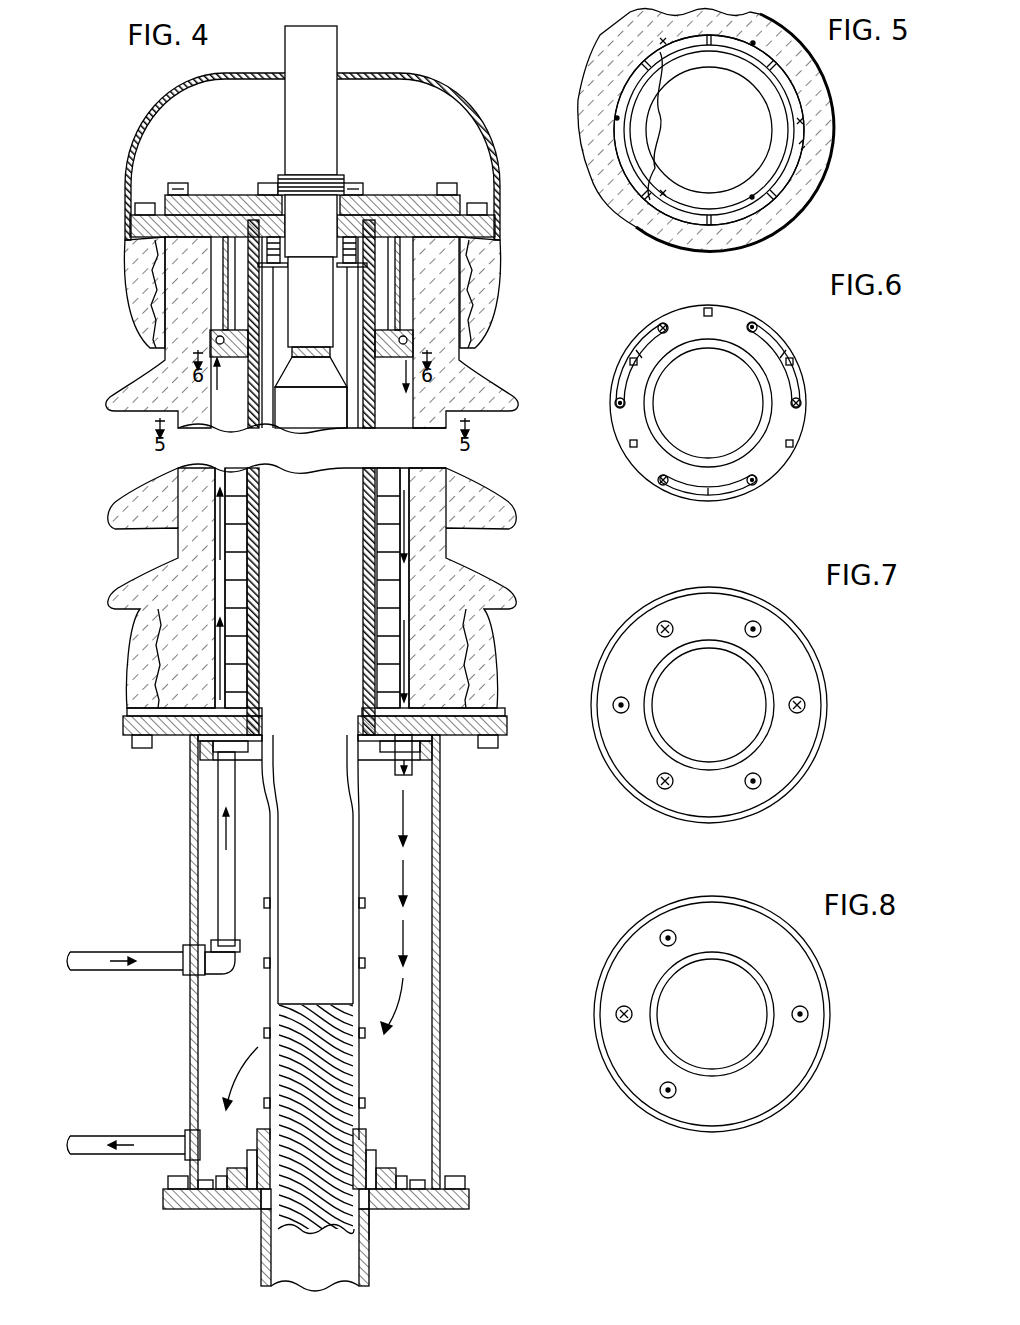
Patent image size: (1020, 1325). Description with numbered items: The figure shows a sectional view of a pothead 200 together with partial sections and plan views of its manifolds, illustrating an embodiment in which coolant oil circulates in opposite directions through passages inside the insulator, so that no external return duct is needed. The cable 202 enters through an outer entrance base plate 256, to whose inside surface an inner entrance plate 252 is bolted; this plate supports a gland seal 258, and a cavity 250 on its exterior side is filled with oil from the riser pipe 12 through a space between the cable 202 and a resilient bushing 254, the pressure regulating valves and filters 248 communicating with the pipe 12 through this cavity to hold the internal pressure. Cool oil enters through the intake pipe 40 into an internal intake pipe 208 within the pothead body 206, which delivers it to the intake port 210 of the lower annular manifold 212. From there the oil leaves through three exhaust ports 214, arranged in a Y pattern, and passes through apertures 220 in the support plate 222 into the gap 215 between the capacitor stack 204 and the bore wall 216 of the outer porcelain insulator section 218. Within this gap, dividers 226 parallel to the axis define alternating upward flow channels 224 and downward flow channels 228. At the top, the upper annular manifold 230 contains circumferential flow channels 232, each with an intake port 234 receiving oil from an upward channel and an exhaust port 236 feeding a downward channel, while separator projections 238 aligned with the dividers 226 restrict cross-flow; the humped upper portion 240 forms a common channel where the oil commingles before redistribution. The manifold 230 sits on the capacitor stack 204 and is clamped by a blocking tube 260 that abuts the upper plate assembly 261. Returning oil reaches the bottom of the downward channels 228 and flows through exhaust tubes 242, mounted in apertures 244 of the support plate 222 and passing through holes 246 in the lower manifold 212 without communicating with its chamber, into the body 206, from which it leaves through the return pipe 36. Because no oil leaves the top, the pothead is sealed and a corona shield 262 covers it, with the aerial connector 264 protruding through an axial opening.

In FIG. 4, the riser pipe 12 is at (370, 1250).
In FIG. 4, the return pipe 36 is at (118, 1137).
In FIG. 4, the intake pipe 40 is at (100, 952).
In FIG. 4, the pothead 200 is at (105, 168).
In FIG. 4, the cable 202 is at (331, 901).
In FIG. 4, the capacitor stack 204 is at (410, 563).
In FIG. 5, the capacitor stack 204 is at (786, 132).
In FIG. 4, the pothead body 206 is at (440, 905).
In FIG. 4, the internal intake pipe 208 is at (225, 870).
In FIG. 4, the intake port 210 is at (262, 762).
In FIG. 8, the intake port 210 is at (615, 1014).
In FIG. 4, the lower annular manifold 212 is at (252, 752).
In FIG. 7, the lower annular manifold 212 is at (828, 648).
In FIG. 8, the lower annular manifold 212 is at (625, 930).
In FIG. 4, the exhaust ports 214 is at (232, 746).
In FIG. 7, the exhaust ports 214 is at (762, 627).
In FIG. 4, the gap 215 is at (412, 658).
In FIG. 5, the gap 215 is at (785, 188).
In FIG. 4, the bore wall 216 is at (470, 596).
In FIG. 5, the bore wall 216 is at (800, 140).
In FIG. 4, the outer porcelain insulator section 218 is at (472, 492).
In FIG. 5, the outer porcelain insulator section 218 is at (838, 158).
In FIG. 4, the apertures 220 is at (215, 707).
In FIG. 4, the support plate 222 is at (507, 727).
In FIG. 5, the upward flow channels 224 is at (614, 106).
In FIG. 5, the dividers 226 is at (640, 70).
In FIG. 5, the downward flow channels 228 is at (691, 126).
In FIG. 4, the upper annular manifold 230 is at (296, 332).
In FIG. 6, the upper annular manifold 230 is at (815, 420).
In FIG. 6, the flow channels 232 is at (640, 340).
In FIG. 4, the intake port 234 is at (221, 350).
In FIG. 6, the intake port 234 is at (614, 405).
In FIG. 4, the exhaust port 236 is at (405, 357).
In FIG. 6, the exhaust port 236 is at (665, 322).
In FIG. 6, the separator projections 238 is at (722, 308).
In FIG. 4, the upper portion 240 is at (392, 345).
In FIG. 4, the exhaust tubes 242 is at (400, 778).
In FIG. 8, the exhaust tubes 242 is at (670, 928).
In FIG. 4, the apertures 244 is at (462, 711).
In FIG. 4, the holes 246 is at (415, 755).
In FIG. 7, the holes 246 is at (660, 622).
In FIG. 4, the pressure regulating valves and filters 248 is at (242, 1168).
In FIG. 4, the cavity 250 is at (378, 1212).
In FIG. 4, the inner entrance plate 252 is at (408, 1212).
In FIG. 4, the resilient bushing 254 is at (352, 1190).
In FIG. 4, the outer entrance base plate 256 is at (470, 1200).
In FIG. 4, the gland seal 258 is at (370, 1150).
In FIG. 4, the blocking tube 260 is at (395, 265).
In FIG. 4, the upper plate assembly 261 is at (415, 178).
In FIG. 4, the corona shield 262 is at (447, 82).
In FIG. 4, the aerial connector 264 is at (335, 46).